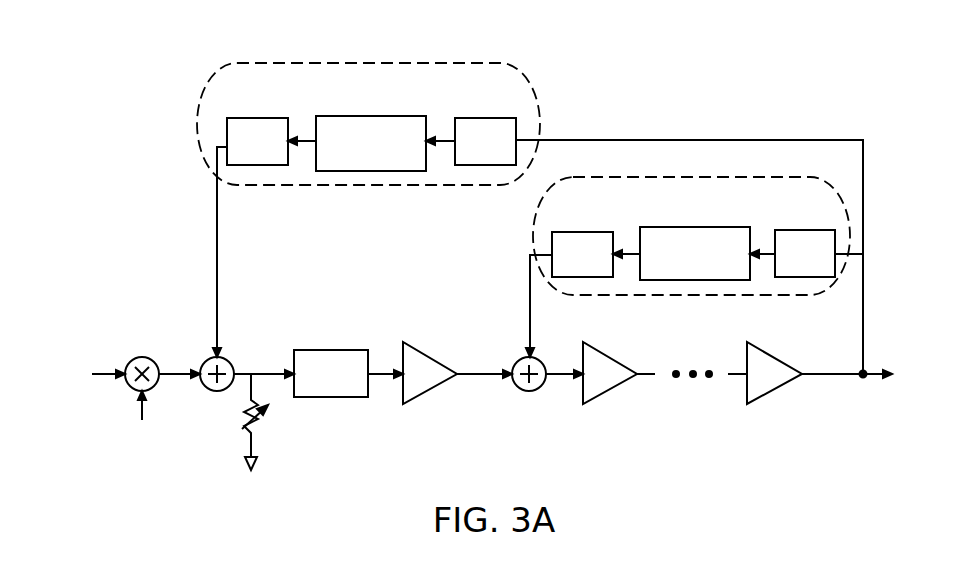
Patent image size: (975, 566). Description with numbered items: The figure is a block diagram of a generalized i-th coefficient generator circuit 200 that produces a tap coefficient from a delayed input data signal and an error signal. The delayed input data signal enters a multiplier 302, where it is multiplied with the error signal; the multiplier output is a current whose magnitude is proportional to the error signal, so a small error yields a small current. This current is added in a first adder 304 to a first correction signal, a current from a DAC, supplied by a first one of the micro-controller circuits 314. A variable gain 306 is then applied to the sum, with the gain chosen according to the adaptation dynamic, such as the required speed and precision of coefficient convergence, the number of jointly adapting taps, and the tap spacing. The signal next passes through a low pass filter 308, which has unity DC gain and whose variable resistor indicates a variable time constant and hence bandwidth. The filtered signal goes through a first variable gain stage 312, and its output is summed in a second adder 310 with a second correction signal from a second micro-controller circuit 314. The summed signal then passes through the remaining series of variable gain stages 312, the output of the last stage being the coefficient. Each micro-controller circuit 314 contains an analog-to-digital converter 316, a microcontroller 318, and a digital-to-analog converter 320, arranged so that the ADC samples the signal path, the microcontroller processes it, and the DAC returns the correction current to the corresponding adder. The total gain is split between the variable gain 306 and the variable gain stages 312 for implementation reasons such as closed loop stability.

The coefficient generator circuit 200 is at (102, 184).
The multiplier 302 is at (142, 357).
The first adder 304 is at (213, 391).
The variable gain 306 is at (263, 433).
The variable gain low pass filter 308 is at (331, 350).
The second adder 310 is at (529, 391).
The variable gain stage 312 is at (421, 397).
The micro-controller circuit 314 is at (235, 63).
The analog-to-digital converter 316 is at (470, 118).
The microcontroller 318 is at (363, 116).
The digital-to-analog converter 320 is at (257, 118).